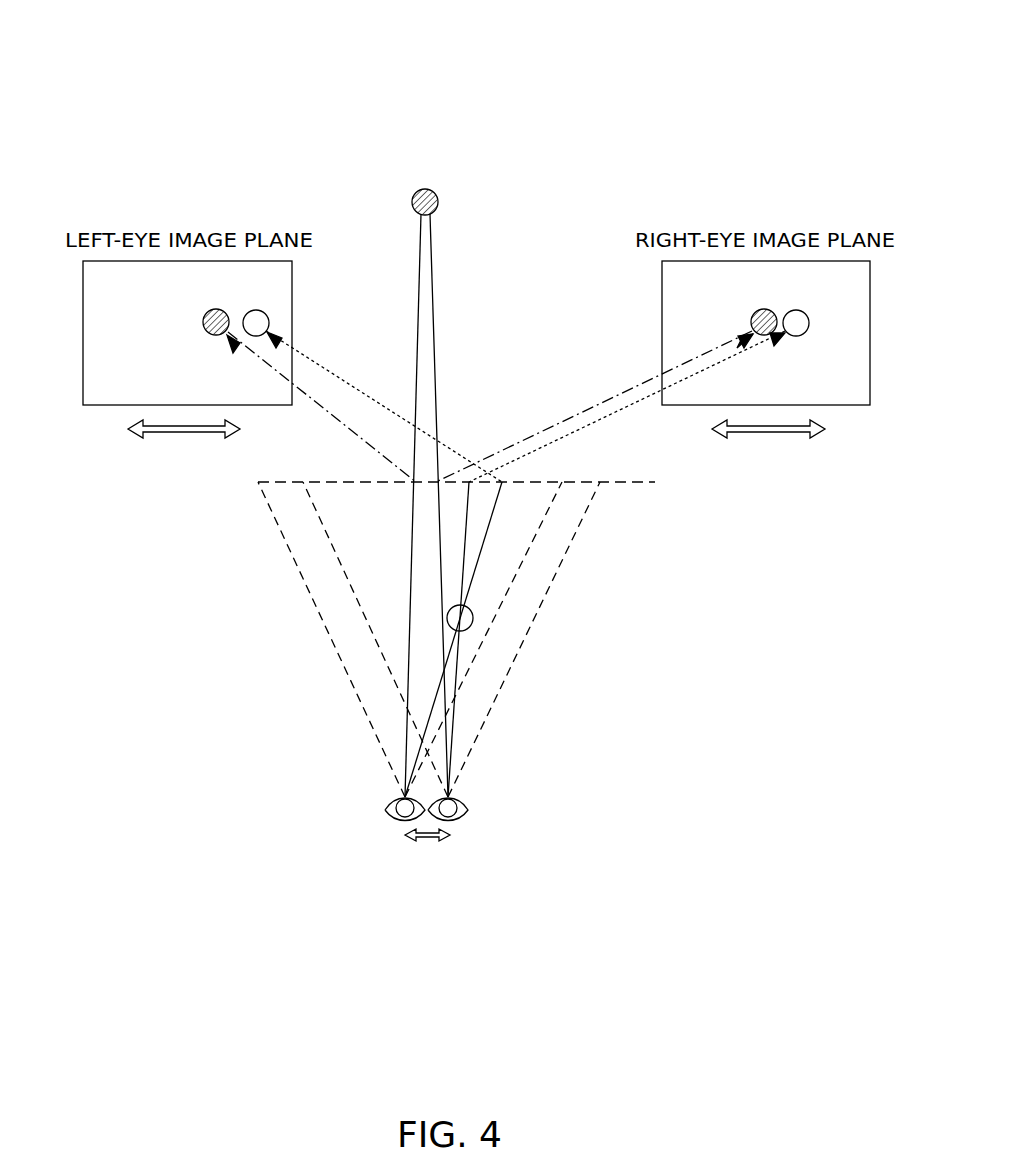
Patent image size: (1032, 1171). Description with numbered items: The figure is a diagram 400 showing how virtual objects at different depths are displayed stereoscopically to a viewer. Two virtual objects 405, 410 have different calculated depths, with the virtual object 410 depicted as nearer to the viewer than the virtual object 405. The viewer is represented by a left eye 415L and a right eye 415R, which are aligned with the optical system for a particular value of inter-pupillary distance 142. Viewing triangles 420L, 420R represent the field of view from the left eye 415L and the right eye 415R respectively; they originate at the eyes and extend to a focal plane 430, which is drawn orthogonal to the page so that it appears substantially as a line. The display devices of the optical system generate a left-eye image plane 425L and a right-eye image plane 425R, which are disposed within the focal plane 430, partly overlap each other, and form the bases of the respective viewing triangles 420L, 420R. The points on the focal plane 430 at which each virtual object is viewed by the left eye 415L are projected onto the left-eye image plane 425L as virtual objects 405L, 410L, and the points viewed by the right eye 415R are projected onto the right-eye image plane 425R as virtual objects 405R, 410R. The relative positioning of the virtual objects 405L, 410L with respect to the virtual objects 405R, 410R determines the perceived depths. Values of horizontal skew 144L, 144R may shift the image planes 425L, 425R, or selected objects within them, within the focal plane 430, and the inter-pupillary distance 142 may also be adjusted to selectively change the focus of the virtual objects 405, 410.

The diagram 400 is at (748, 60).
The virtual object 405 is at (435, 192).
The virtual object 405L is at (204, 330).
The virtual object 405R is at (757, 310).
The virtual object 410 is at (473, 620).
The virtual object 410L is at (256, 310).
The virtual object 410R is at (809, 320).
The left eye 415L is at (388, 812).
The right eye 415R is at (468, 812).
The viewing triangle 420L is at (347, 672).
The viewing triangle 420R is at (497, 695).
The left-eye image plane 425L is at (292, 275).
The right-eye image plane 425R is at (662, 282).
The focal plane 430 is at (637, 483).
The inter-pupillary distance 142 is at (427, 841).
The horizontal skew 144L is at (183, 435).
The horizontal skew 144R is at (770, 435).